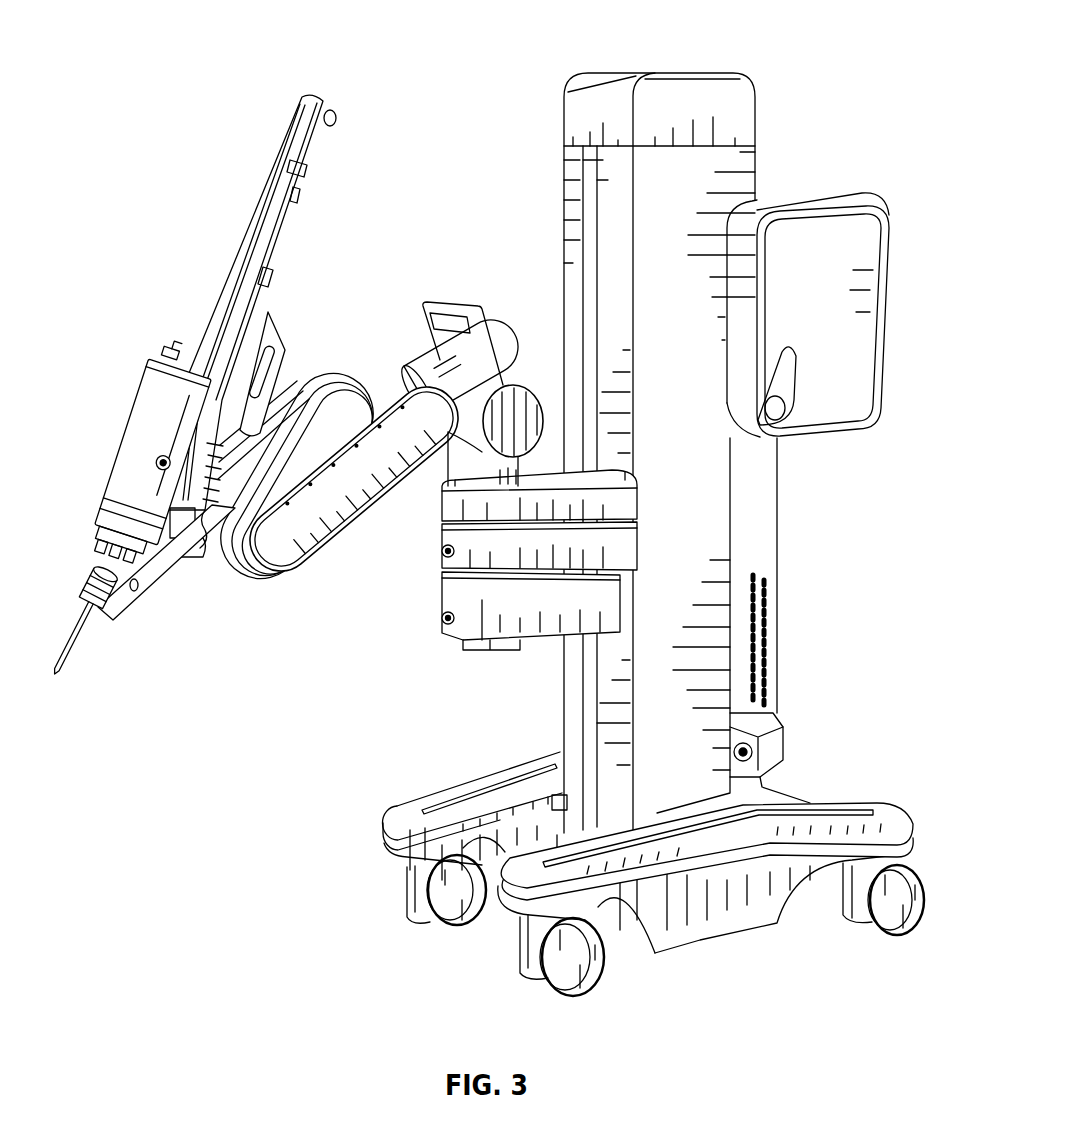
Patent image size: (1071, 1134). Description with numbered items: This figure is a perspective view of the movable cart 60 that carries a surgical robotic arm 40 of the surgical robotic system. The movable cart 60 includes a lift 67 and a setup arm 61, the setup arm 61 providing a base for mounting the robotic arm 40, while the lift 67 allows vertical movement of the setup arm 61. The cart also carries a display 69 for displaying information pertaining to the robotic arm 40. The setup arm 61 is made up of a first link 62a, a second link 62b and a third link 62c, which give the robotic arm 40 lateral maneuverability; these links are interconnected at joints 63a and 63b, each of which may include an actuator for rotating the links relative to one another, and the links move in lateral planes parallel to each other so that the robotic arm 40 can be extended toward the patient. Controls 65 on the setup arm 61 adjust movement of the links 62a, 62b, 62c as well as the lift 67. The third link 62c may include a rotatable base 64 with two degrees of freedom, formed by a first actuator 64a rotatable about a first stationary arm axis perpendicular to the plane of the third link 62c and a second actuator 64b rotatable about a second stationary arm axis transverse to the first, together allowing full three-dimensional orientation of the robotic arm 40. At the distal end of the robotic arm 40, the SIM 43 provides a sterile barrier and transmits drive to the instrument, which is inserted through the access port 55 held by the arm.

The robotic arm 40 is at (348, 378).
The SIM 43 is at (97, 513).
The access port 55 is at (77, 647).
The movable cart 60 is at (653, 534).
The setup arm 61 is at (482, 643).
The first link 62a is at (560, 613).
The second link 62b is at (442, 574).
The third link 62c is at (441, 527).
The joint 63a is at (442, 602).
The joint 63b is at (628, 503).
The rotatable base 64 is at (548, 322).
The first actuator 64a is at (495, 318).
The second actuator 64b is at (446, 510).
The controls 65 is at (428, 316).
The lift 67 is at (588, 253).
The display 69 is at (437, 305).